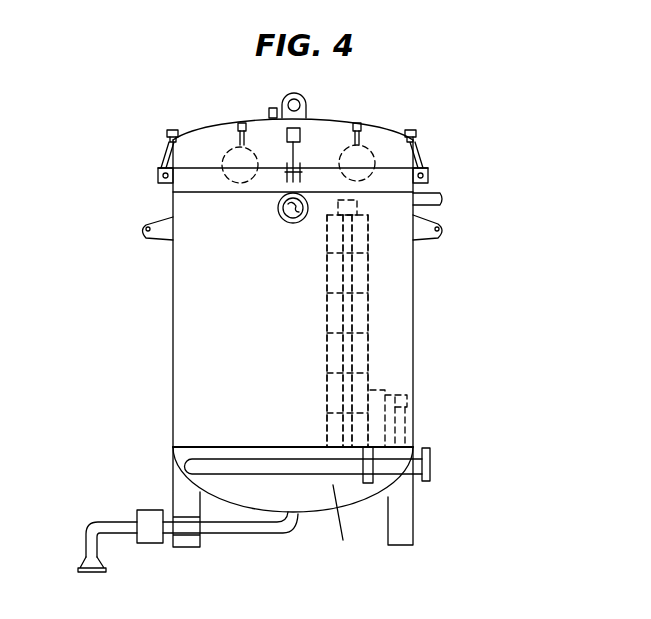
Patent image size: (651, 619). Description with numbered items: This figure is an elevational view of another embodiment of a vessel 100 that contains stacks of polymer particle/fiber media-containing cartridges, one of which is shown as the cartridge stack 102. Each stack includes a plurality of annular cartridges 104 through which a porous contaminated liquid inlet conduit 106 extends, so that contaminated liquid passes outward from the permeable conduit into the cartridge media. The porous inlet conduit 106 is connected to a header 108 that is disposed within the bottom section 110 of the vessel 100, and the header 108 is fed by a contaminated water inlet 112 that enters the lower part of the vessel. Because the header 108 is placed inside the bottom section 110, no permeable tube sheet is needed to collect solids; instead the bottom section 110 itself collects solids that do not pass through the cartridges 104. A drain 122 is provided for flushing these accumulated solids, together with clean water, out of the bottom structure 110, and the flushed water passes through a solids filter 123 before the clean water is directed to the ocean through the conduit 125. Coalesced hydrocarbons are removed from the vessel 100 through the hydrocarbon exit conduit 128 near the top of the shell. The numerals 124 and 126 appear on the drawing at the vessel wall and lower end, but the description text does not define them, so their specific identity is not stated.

The vessel 100 is at (506, 190).
The cartridge stack 102 is at (316, 252).
The annular cartridges 104 is at (370, 245).
The porous contaminated liquid inlet conduit 106 is at (340, 310).
The header 108 is at (331, 478).
The bottom section 110 is at (312, 513).
The contaminated water inlet 112 is at (400, 480).
The drain 122 is at (218, 540).
The solids filter 123 is at (152, 515).
The vessel side wall 124 is at (173, 355).
The conduit 125 is at (100, 527).
The vessel bottom wall 126 is at (181, 440).
The hydrocarbon exit conduit 128 is at (425, 200).